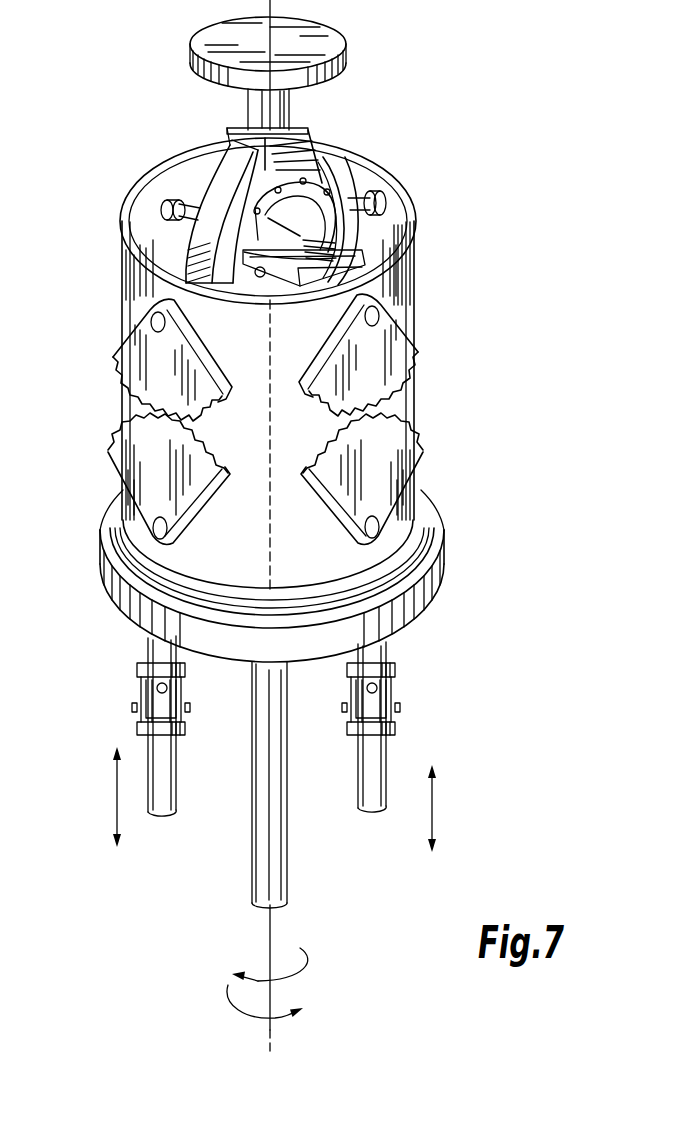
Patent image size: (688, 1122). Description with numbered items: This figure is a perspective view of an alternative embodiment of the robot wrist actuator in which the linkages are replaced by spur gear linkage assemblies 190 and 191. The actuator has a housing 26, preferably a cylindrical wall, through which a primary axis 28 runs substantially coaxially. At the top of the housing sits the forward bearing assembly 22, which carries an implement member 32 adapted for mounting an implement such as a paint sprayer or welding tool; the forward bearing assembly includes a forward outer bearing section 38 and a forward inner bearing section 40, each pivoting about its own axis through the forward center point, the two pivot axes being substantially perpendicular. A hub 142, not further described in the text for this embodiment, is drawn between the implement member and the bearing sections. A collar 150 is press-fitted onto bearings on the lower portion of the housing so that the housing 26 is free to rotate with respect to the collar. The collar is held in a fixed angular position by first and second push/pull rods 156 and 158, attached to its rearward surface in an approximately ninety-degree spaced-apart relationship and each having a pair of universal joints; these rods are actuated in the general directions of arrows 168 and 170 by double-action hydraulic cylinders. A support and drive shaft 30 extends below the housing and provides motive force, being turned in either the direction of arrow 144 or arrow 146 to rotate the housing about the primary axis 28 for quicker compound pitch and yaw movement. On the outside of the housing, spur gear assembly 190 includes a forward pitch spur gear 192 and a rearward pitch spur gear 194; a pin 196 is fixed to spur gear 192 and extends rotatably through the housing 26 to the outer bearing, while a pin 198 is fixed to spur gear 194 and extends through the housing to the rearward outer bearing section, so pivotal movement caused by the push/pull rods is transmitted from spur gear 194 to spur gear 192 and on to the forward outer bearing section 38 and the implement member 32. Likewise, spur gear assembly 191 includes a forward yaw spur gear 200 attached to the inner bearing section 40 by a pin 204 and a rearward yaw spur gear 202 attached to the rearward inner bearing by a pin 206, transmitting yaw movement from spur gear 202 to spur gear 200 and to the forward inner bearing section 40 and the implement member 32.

The forward bearing assembly 22 is at (366, 181).
The housing 26 is at (406, 278).
The primary axis 28 is at (272, 933).
The support and drive shaft 30 is at (265, 860).
The implement member 32 is at (270, 104).
The forward outer bearing section 38 is at (225, 197).
The forward inner bearing section 40 is at (318, 237).
The hub 142 is at (298, 158).
The arrow 144 is at (257, 980).
The arrow 146 is at (282, 1020).
The collar 150 is at (113, 527).
The first push/pull rod 156 is at (131, 702).
The second push/pull rod 158 is at (397, 707).
The arrow 168 is at (117, 792).
The arrow 170 is at (433, 805).
The spur gear linkage assembly 190 is at (123, 405).
The spur gear linkage assembly 191 is at (421, 417).
The forward pitch spur gear 192 is at (152, 360).
The rearward pitch spur gear 194 is at (137, 457).
The pin 196 is at (165, 322).
The pin 198 is at (206, 548).
The forward yaw spur gear 200 is at (399, 355).
The rearward yaw spur gear 202 is at (398, 462).
The pin 204 is at (368, 315).
The pin 206 is at (362, 530).